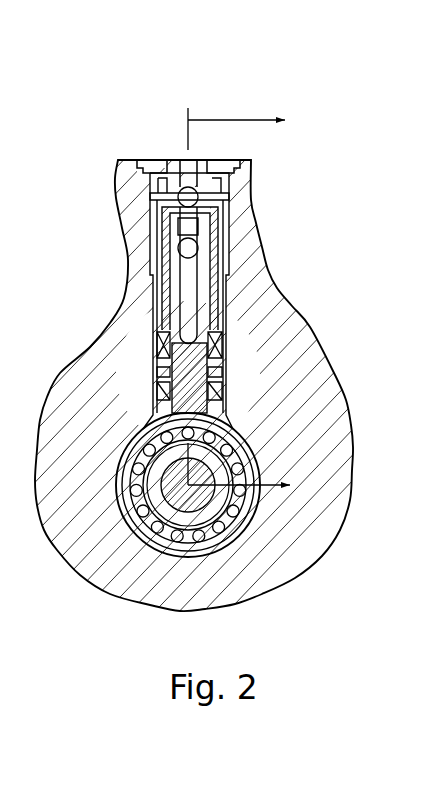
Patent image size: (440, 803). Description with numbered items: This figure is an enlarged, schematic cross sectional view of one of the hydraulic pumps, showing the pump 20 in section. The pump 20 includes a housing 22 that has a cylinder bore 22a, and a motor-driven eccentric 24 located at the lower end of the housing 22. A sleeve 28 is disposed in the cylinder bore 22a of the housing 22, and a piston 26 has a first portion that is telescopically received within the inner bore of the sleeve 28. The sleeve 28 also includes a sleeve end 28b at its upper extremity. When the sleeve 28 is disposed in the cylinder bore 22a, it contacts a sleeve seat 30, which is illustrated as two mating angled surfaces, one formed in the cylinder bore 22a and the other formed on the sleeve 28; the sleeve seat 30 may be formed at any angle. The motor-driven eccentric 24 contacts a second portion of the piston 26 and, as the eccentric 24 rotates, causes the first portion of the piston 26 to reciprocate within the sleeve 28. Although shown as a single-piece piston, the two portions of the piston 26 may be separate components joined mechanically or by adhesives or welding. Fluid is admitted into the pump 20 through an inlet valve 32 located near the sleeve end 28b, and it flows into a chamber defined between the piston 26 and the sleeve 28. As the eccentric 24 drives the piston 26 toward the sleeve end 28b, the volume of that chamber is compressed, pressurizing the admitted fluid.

The pump 20 is at (236, 92).
The housing 22 is at (300, 323).
The cylinder bore 22a is at (150, 219).
The motor-driven eccentric 24 is at (254, 497).
The piston 26 is at (210, 384).
The sleeve 28 is at (158, 258).
The sleeve end 28b is at (168, 160).
The sleeve seat 30 is at (148, 250).
The inlet valve 32 is at (212, 228).